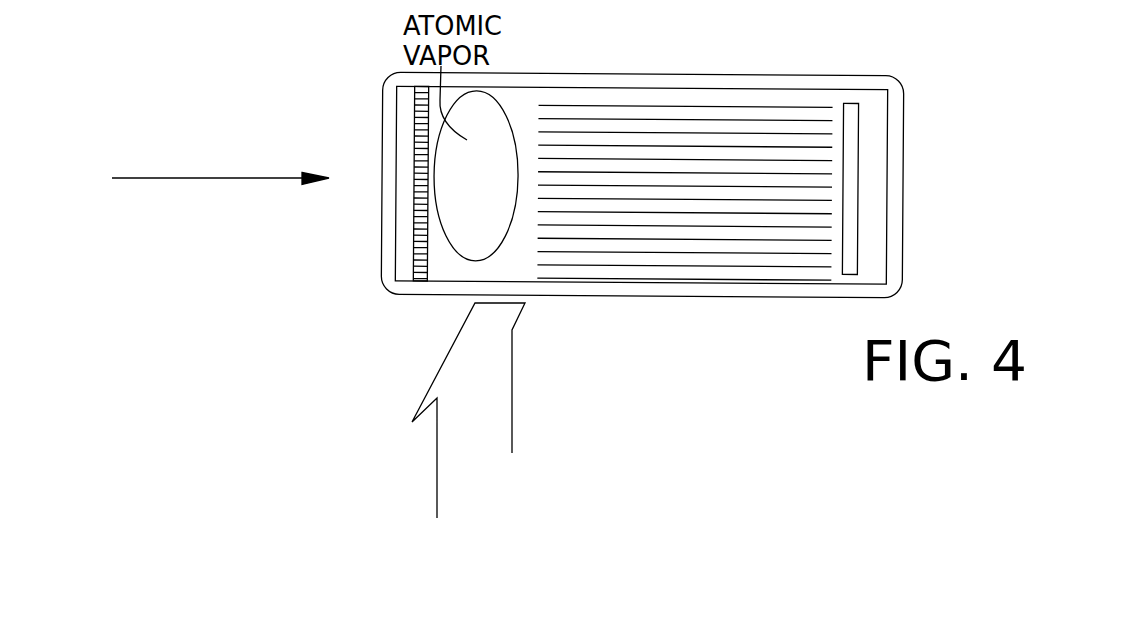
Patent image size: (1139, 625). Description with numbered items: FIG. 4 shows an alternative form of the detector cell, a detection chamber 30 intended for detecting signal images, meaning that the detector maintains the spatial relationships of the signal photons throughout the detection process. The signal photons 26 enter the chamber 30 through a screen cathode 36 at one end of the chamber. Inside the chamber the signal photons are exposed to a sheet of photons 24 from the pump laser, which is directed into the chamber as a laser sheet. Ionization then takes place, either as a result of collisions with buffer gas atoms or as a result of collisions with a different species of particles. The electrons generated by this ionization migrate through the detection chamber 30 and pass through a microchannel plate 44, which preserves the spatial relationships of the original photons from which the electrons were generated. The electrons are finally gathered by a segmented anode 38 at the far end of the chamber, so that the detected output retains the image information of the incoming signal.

The sheet of photons from the pump laser 24 is at (492, 460).
The signal photons 26 is at (197, 202).
The detection chamber 30 is at (735, 298).
The screen cathode 36 is at (413, 115).
The segmented anode 38 is at (858, 115).
The microchannel plate 44 is at (648, 100).